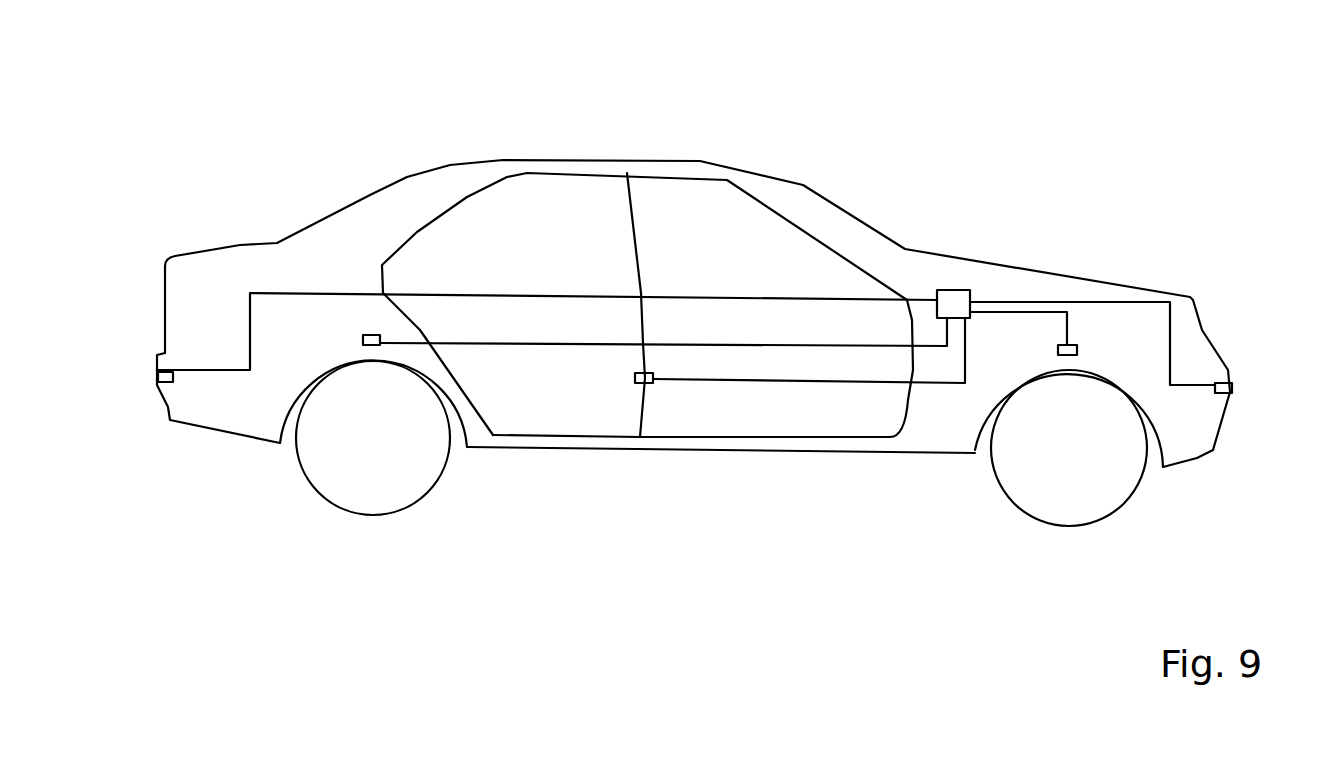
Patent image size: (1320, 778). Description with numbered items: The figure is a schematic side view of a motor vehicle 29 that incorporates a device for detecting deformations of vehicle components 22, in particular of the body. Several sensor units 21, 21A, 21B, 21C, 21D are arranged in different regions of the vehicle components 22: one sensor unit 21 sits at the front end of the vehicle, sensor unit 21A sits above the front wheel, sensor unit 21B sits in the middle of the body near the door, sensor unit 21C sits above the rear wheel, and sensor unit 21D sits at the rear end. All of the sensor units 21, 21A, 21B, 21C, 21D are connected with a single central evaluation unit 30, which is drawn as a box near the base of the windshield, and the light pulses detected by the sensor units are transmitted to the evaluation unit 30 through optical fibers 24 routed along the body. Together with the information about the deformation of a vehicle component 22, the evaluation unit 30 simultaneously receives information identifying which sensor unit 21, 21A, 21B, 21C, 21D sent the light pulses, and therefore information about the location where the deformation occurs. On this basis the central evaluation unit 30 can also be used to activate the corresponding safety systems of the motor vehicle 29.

The motor vehicle 29 is at (217, 138).
The vehicle components 22 is at (219, 283).
The central evaluation unit 30 is at (957, 287).
The optical fibers 24 is at (1100, 302).
The sensor unit 21 is at (1230, 393).
The sensor unit 21A is at (1063, 355).
The sensor unit 21B is at (650, 385).
The sensor unit 21C is at (372, 345).
The sensor unit 21D is at (157, 385).